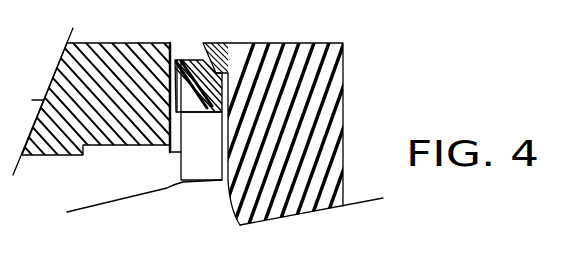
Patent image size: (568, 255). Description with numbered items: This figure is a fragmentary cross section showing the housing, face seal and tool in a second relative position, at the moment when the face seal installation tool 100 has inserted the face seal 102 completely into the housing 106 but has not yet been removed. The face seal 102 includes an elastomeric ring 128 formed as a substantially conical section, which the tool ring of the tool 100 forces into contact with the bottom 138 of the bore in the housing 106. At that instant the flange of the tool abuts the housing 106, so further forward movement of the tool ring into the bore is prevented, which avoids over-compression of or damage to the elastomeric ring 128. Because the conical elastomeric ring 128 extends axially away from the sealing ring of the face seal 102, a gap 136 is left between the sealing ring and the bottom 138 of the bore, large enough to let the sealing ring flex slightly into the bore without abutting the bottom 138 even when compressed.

The face seal installation tool 100 is at (343, 50).
The face seal 102 is at (202, 168).
The housing 106 is at (147, 62).
The elastomeric ring 128 is at (183, 62).
The gap 136 is at (175, 182).
The bottom of bore 138 is at (202, 140).